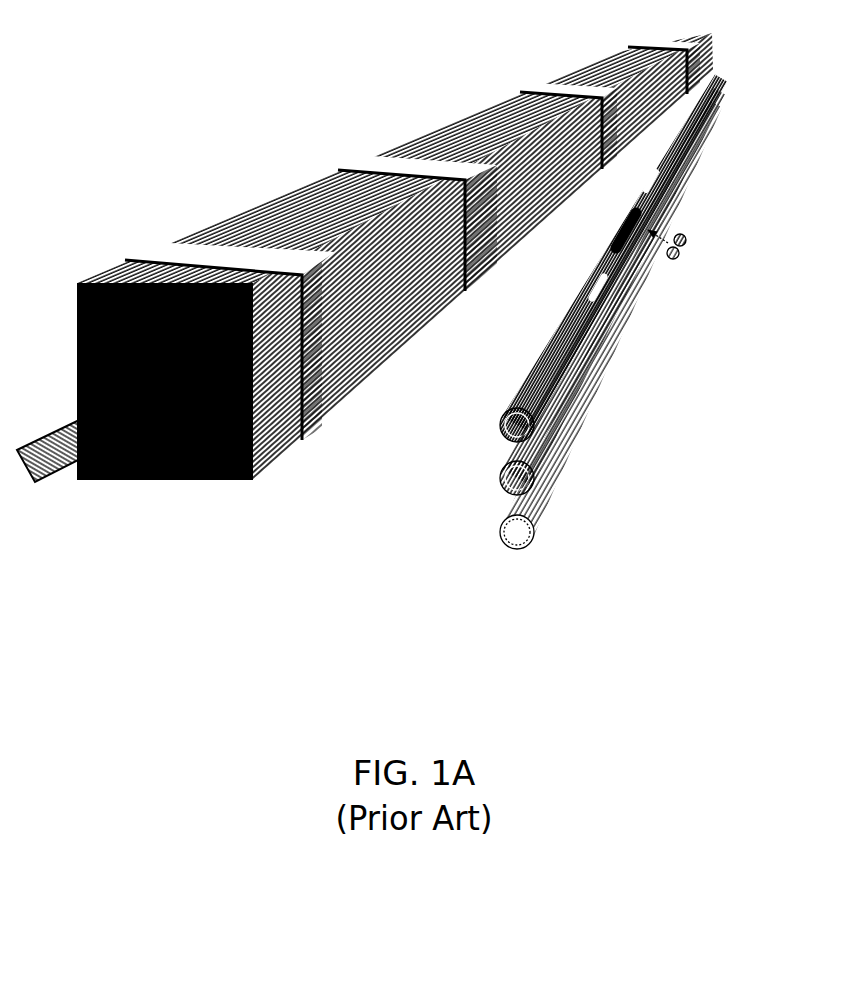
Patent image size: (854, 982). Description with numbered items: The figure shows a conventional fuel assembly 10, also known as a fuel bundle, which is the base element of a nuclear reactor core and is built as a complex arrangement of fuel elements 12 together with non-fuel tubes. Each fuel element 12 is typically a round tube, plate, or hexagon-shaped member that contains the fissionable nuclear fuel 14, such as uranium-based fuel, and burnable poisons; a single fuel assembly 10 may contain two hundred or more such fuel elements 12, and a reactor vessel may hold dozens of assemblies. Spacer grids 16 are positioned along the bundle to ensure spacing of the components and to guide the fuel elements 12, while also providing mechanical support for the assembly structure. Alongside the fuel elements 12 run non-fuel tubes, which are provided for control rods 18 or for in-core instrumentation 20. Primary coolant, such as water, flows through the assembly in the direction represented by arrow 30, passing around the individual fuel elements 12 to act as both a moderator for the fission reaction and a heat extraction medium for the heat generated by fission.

The fuel assembly 10 is at (395, 249).
The fuel element 12 is at (517, 426).
The fissionable nuclear fuel 14 is at (688, 251).
The spacer grid 16 is at (647, 46).
The control rod 18 is at (517, 479).
The in-core instrumentation 20 is at (517, 533).
The arrow 30 is at (50, 457).